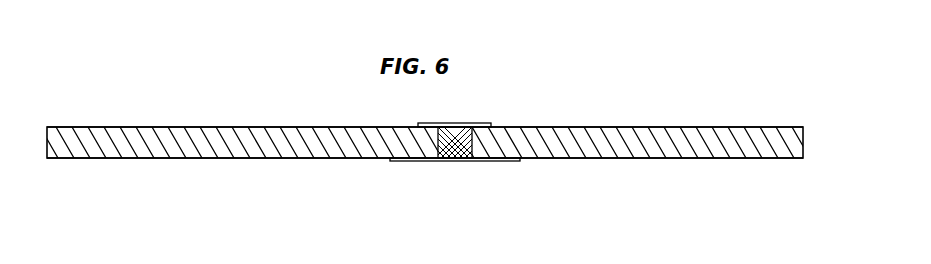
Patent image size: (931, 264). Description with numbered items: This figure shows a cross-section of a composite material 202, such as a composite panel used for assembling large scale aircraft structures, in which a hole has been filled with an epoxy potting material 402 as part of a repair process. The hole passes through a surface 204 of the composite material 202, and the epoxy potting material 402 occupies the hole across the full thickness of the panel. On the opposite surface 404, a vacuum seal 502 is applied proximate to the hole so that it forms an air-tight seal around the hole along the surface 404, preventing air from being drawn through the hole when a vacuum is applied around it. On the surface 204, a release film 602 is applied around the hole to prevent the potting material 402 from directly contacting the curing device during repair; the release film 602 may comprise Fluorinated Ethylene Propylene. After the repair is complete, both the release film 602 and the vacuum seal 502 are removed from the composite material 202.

The composite material 202 is at (755, 132).
The surface 204 is at (614, 128).
The surface 404 is at (641, 158).
The epoxy potting material 402 is at (447, 127).
The release film 602 is at (478, 123).
The vacuum seal 502 is at (471, 161).